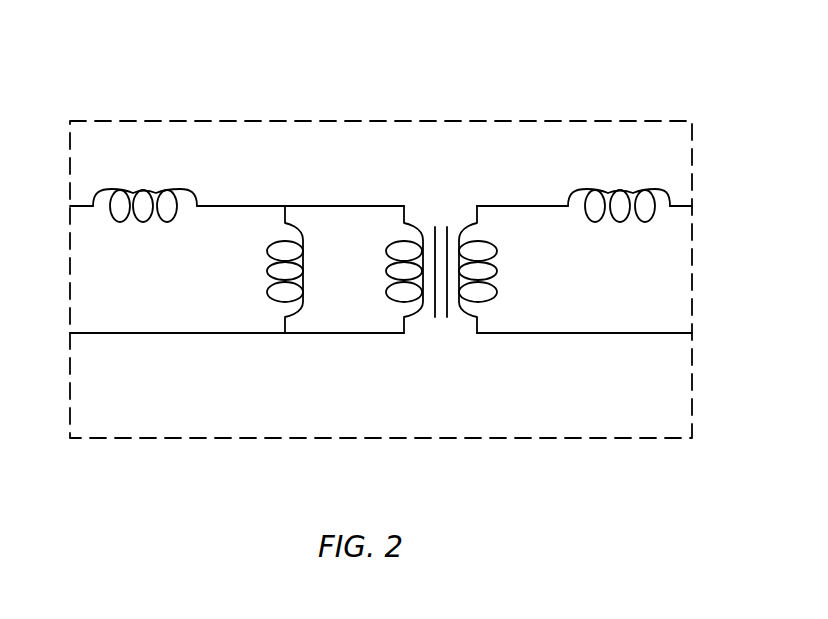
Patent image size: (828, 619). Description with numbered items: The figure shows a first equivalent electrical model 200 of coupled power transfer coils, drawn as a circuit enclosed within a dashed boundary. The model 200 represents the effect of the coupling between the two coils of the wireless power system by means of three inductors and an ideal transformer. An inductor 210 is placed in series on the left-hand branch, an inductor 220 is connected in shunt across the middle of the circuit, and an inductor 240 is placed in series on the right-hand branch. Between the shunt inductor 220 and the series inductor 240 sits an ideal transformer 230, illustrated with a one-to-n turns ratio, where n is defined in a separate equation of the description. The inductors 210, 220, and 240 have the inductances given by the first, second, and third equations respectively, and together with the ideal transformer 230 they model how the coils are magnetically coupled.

The first equivalent electrical model 200 is at (533, 121).
The inductor 210 is at (138, 227).
The inductor 220 is at (269, 313).
The ideal transformer 230 is at (436, 350).
The inductor 240 is at (622, 233).